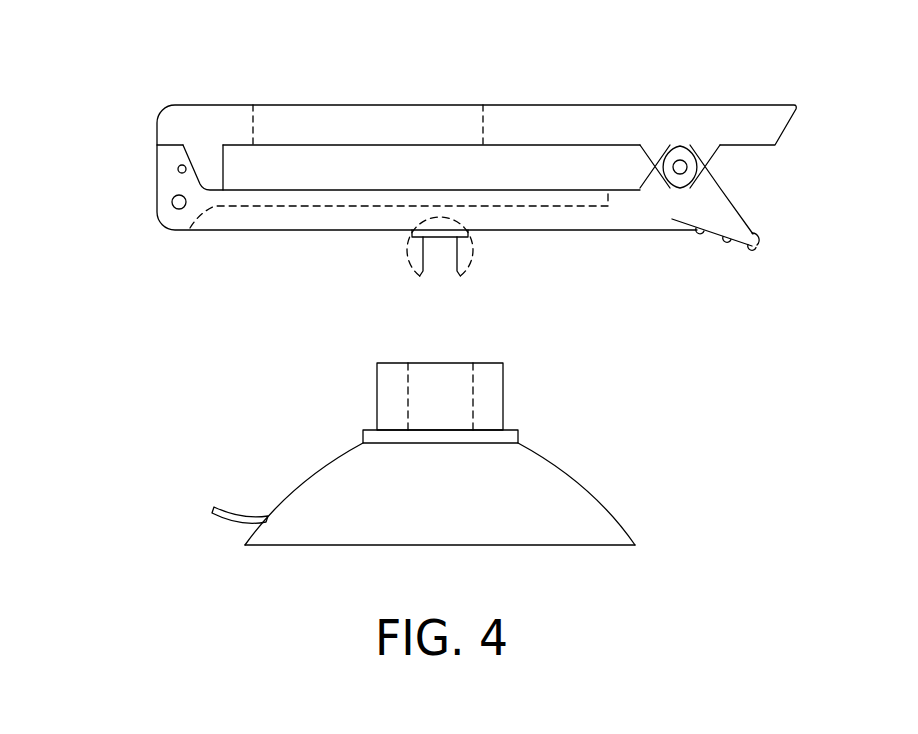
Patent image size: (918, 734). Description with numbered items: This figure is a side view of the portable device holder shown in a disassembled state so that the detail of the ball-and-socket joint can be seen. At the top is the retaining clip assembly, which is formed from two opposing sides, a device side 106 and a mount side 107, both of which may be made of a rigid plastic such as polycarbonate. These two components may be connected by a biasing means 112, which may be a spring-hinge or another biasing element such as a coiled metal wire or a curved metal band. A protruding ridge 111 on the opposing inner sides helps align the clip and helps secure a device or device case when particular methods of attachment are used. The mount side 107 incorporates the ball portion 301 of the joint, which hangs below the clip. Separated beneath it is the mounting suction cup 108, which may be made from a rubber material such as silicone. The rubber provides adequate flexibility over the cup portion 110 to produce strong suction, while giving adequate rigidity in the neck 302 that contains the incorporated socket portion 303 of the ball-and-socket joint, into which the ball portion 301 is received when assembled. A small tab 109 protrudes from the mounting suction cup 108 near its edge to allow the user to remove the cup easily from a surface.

The device side 106 is at (148, 113).
The mount side 107 is at (150, 220).
The protruding ridge 111 is at (157, 146).
The biasing means 112 is at (718, 168).
The ball portion 301 is at (398, 298).
The neck 302 is at (513, 390).
The socket portion 303 is at (398, 400).
The mounting suction cup 108 is at (587, 498).
The small tab 109 is at (232, 509).
The cup portion 110 is at (263, 551).